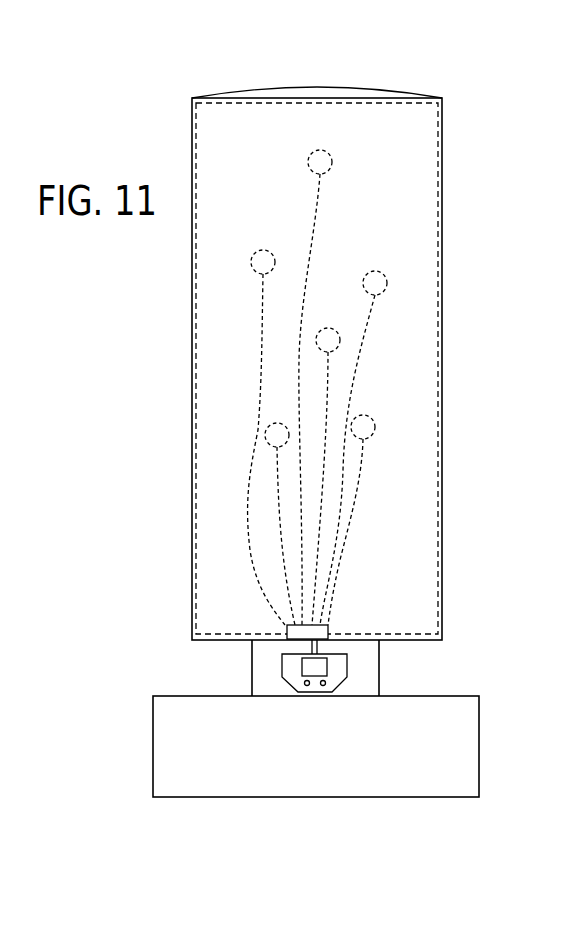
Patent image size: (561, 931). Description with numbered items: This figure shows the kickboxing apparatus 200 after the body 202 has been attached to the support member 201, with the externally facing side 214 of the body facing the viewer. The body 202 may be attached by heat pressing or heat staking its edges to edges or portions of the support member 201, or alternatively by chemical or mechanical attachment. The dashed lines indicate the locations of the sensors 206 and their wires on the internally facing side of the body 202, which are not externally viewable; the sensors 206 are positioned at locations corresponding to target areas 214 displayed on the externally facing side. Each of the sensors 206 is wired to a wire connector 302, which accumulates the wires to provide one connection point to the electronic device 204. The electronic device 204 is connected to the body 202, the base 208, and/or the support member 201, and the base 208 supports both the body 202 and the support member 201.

The kickboxing apparatus 200 is at (482, 131).
The support member 201 is at (222, 93).
The body 202 is at (442, 293).
The electronic device 204 is at (283, 661).
The sensors 206 is at (331, 158).
The base 208 is at (479, 752).
The target areas 214 is at (303, 148).
The wire connector 302 is at (287, 630).